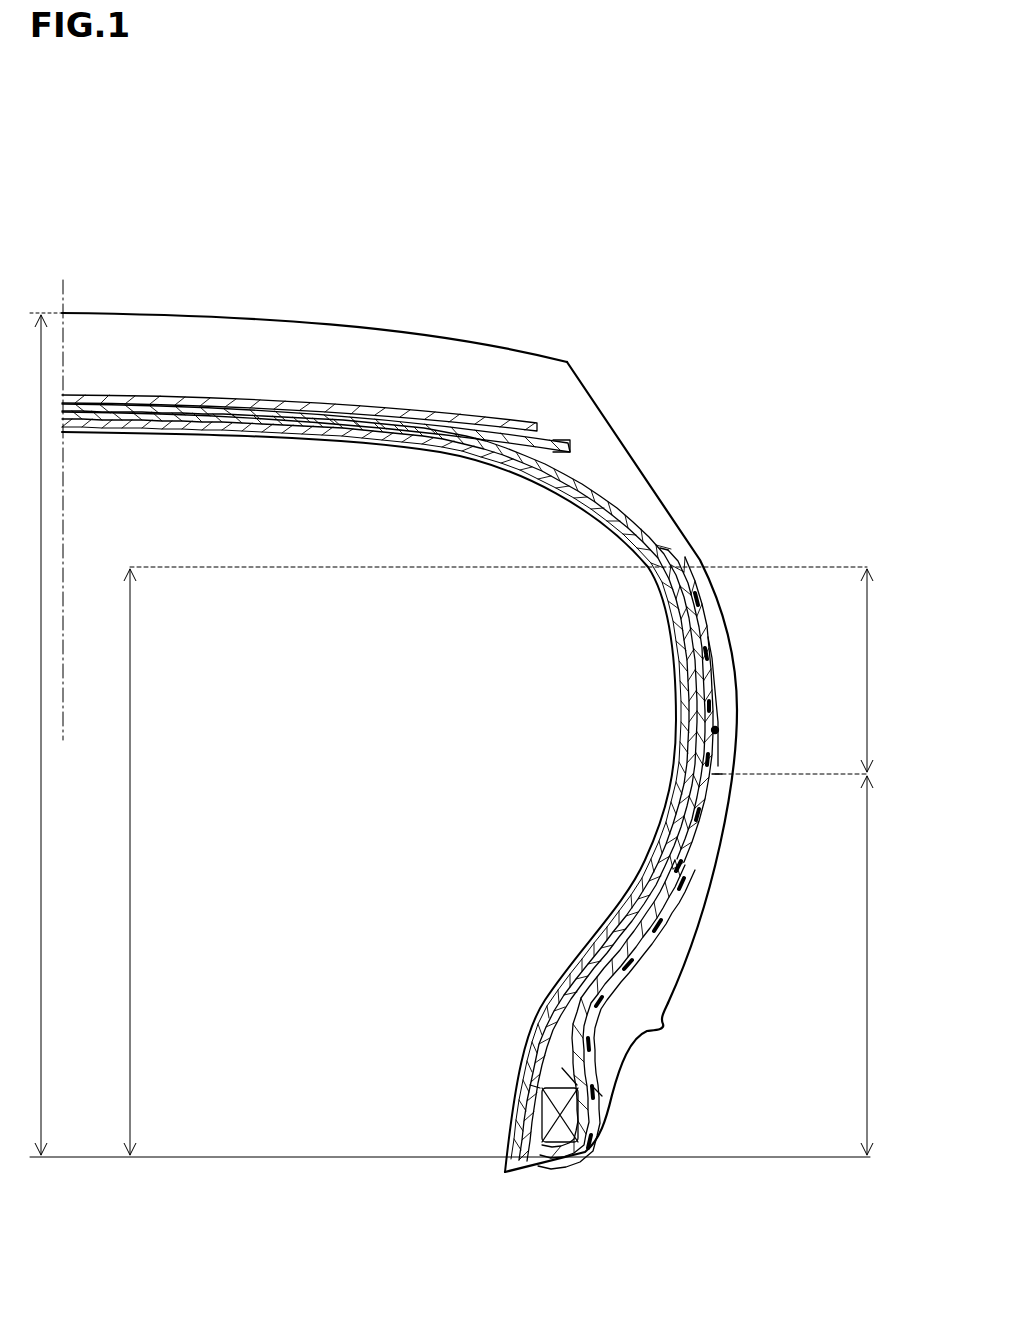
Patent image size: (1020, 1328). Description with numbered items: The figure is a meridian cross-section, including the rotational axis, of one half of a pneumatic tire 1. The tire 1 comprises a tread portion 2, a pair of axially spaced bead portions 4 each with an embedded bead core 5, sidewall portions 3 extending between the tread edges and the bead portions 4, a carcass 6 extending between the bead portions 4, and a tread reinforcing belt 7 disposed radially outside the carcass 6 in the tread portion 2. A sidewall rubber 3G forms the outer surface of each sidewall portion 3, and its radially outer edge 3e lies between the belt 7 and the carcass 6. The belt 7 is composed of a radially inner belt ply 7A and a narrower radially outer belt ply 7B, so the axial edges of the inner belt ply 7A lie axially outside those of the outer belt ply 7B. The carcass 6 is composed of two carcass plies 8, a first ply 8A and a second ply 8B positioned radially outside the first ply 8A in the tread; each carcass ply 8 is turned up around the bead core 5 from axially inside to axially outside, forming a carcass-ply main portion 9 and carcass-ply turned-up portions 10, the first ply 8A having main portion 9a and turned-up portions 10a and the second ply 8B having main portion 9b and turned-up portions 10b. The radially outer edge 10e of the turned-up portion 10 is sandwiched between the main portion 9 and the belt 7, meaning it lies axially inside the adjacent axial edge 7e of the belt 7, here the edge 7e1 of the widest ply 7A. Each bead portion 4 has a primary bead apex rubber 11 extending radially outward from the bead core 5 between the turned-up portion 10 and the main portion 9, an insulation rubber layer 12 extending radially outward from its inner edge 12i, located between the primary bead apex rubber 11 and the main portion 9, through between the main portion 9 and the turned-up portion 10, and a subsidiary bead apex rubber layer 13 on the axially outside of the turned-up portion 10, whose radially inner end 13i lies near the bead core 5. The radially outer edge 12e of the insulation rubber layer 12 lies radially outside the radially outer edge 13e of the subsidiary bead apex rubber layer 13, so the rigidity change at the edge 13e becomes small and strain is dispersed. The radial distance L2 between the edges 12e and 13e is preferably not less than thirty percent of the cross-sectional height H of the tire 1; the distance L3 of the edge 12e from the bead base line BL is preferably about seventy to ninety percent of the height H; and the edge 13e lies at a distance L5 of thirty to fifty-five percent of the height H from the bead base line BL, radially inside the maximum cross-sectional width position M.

The pneumatic tire 1 is at (724, 252).
The tread portion 2 is at (607, 282).
The sidewall portion 3 is at (757, 676).
The radially outer edge of the sidewall rubber 3e is at (447, 437).
The sidewall rubber 3G is at (648, 508).
The bead portion 4 is at (628, 1130).
The bead core 5 is at (548, 1115).
The carcass 6 is at (540, 468).
The tread reinforcing belt 7 is at (222, 252).
The radially inner belt ply 7A is at (250, 410).
The radially outer belt ply 7B is at (328, 410).
The axial edge of the belt 7e is at (548, 440).
The axial edge of the radially inner belt ply 7e1 is at (575, 455).
The carcass ply 8 is at (480, 765).
The first ply 8A is at (545, 582).
The second ply 8B is at (545, 697).
The carcass-ply main portion 9 is at (640, 854).
The carcass-ply main portion of the first ply 9a is at (645, 594).
The carcass-ply main portion of the second ply 9b is at (685, 706).
The carcass-ply turned-up portion 10 is at (700, 856).
The carcass-ply turned-up portion of the first ply 10a is at (675, 658).
The carcass-ply turned-up portion of the second ply 10b is at (683, 770).
The radially outer edge of the carcass-ply turned-up portion 10e is at (570, 452).
The primary bead apex rubber 11 is at (562, 1068).
The insulation rubber layer 12 is at (617, 945).
The radially outer edge of the insulation rubber layer 12e is at (665, 552).
The radially inner edge of the insulation rubber layer 12i is at (535, 1087).
The subsidiary bead apex rubber layer 13 is at (690, 875).
The radially outer edge of the subsidiary bead apex rubber layer 13e is at (716, 770).
The inner end of second carcass ply 13i is at (598, 1092).
The maximum tire cross-sectional width position M is at (718, 728).
The cross-sectional height of the tire H is at (37, 734).
The radial distance between the outer edges of the insulation rubber layer and the s L2 is at (812, 671).
The radial distance of the insulation rubber layer outer edge from the bead base lin L3 is at (479, 861).
The radial distance of the subsidiary bead apex rubber layer outer edge from the bea L5 is at (888, 965).
The bead base line BL is at (760, 1157).